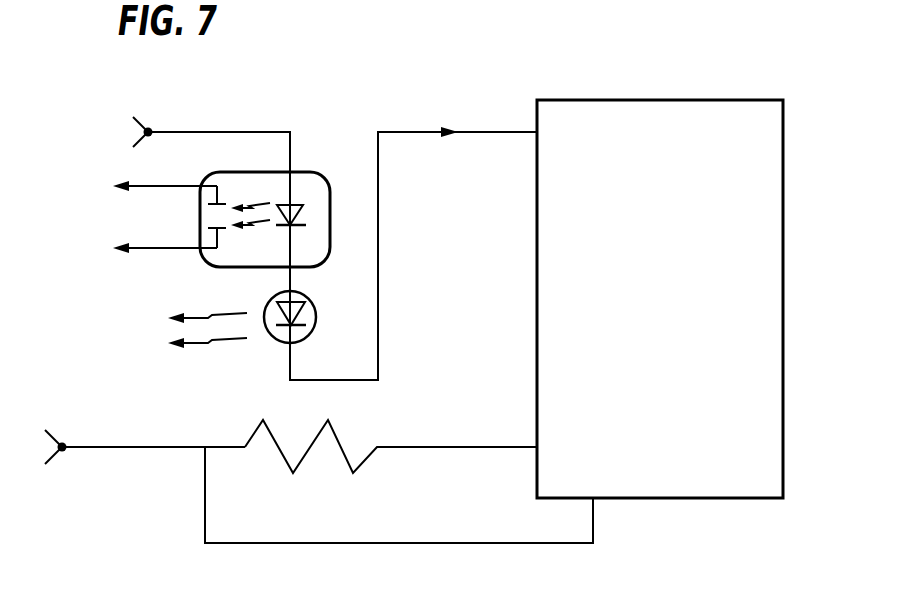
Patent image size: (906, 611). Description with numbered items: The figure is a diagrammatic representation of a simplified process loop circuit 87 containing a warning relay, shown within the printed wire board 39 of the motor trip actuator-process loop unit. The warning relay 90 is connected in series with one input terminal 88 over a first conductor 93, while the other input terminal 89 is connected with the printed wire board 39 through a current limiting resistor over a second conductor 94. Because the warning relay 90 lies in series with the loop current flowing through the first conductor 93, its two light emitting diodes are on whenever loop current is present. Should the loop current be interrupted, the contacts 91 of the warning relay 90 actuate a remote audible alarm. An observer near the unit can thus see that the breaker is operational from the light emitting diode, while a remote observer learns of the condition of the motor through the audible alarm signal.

The printed wire board 39 is at (753, 100).
The process loop circuit 87 is at (687, 580).
The input terminal 88 is at (150, 130).
The input terminal 89 is at (64, 445).
The warning relay 90 is at (205, 189).
The contacts 91 is at (210, 185).
The first conductor 93 is at (380, 292).
The second conductor 94 is at (315, 543).